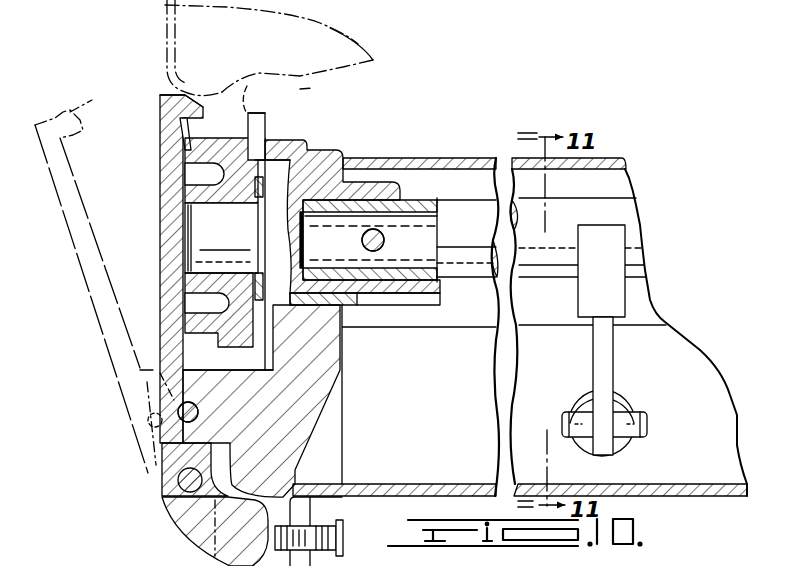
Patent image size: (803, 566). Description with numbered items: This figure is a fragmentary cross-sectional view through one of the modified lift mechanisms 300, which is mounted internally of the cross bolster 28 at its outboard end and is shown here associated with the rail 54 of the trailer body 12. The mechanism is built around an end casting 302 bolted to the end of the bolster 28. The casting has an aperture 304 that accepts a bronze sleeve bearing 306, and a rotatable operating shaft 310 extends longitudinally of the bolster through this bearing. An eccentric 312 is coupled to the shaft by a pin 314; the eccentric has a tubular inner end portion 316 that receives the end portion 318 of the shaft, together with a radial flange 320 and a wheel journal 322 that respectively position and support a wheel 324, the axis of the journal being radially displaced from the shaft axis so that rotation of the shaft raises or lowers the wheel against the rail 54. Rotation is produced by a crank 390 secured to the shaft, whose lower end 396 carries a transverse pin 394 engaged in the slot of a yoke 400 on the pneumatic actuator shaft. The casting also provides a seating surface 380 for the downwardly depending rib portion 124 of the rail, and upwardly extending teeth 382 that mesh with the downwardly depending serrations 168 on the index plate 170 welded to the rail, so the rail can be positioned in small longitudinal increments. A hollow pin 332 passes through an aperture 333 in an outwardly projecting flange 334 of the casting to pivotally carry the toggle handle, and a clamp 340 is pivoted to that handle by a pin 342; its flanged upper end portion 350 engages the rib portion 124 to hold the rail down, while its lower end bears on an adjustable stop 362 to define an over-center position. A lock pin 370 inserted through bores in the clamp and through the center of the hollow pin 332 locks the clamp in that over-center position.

The trailer body 12 is at (350, 34).
The bolster 28 is at (610, 152).
The rail 54 is at (166, 38).
The rib portion 124 is at (222, 91).
The serrations 168 is at (260, 108).
The index plate 170 is at (314, 89).
The lift mechanism 300 is at (633, 152).
The end casting 302 is at (322, 155).
The aperture 304 is at (342, 310).
The bearing 306 is at (361, 180).
The operating shaft 310 is at (447, 197).
The eccentric 312 is at (403, 292).
The pin 314 is at (386, 239).
The tubular inner end portion 316 is at (393, 297).
The end portion 318 is at (360, 241).
The radial flange 320 is at (292, 306).
The wheel journal 322 is at (196, 232).
The wheel 324 is at (190, 320).
The hollow pin 332 is at (200, 412).
The aperture 333 is at (149, 421).
The outwardly projecting flange 334 is at (163, 390).
The clamp 340 is at (158, 184).
The pin 342 is at (178, 487).
The flanged upper end portion 350 is at (158, 110).
The adjustable stop 362 is at (285, 527).
The lock pin 370 is at (190, 401).
The seating surface 380 is at (183, 138).
The teeth 382 is at (266, 116).
The crank 390 is at (618, 371).
The transverse pin 394 is at (651, 425).
The lower end 396 is at (607, 455).
The yoke 400 is at (624, 404).